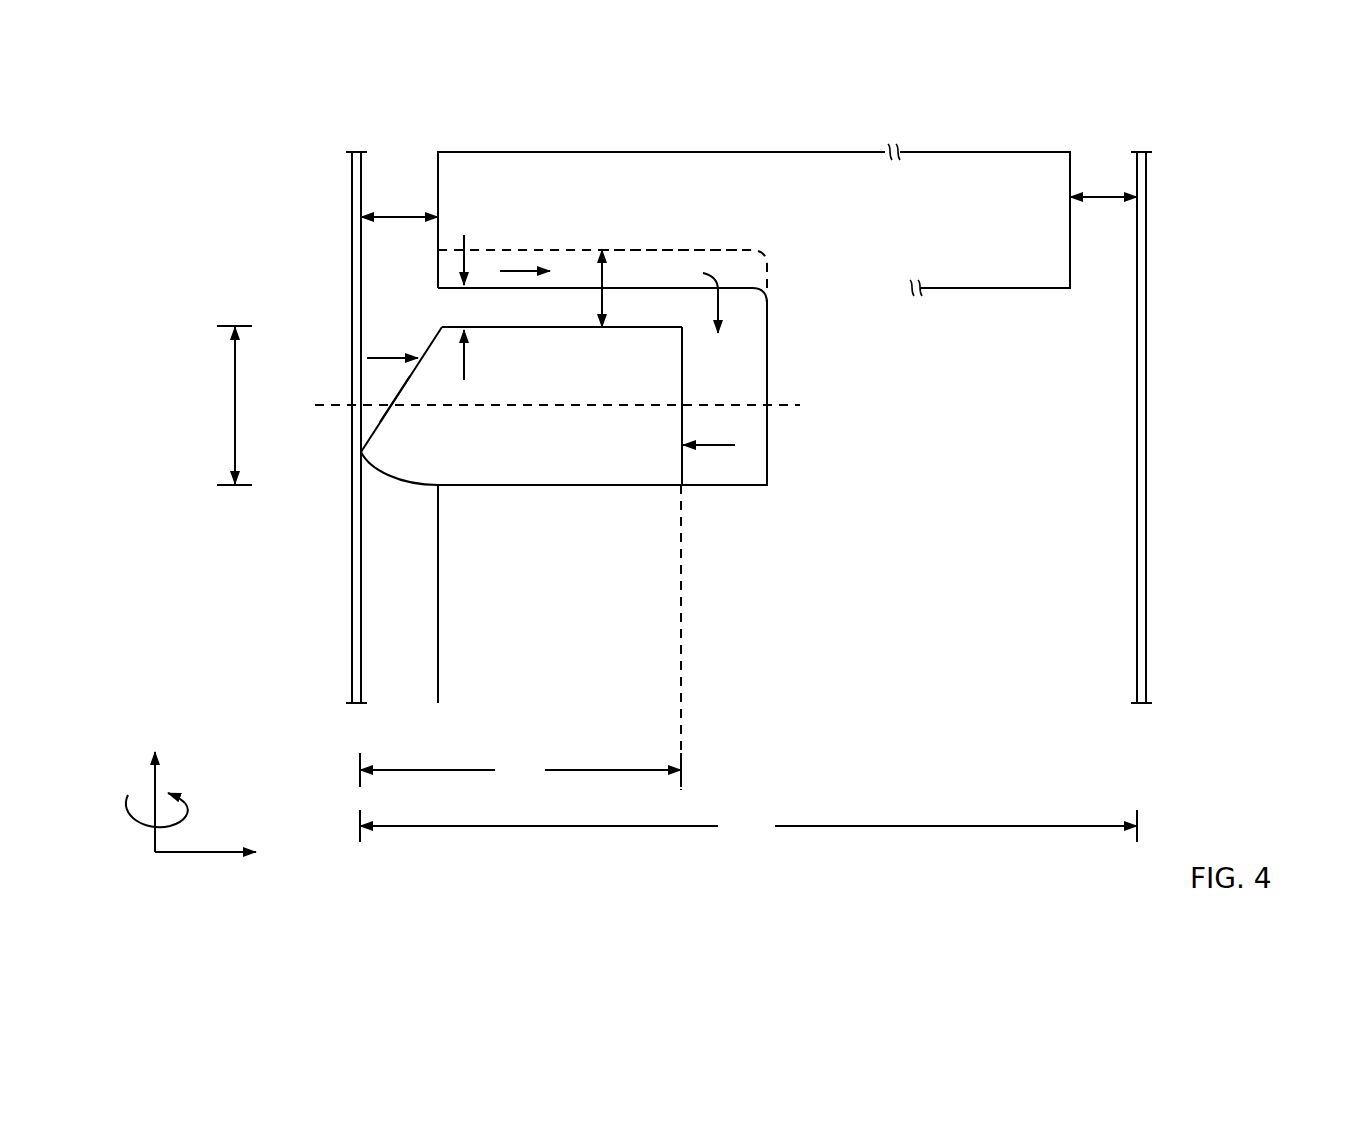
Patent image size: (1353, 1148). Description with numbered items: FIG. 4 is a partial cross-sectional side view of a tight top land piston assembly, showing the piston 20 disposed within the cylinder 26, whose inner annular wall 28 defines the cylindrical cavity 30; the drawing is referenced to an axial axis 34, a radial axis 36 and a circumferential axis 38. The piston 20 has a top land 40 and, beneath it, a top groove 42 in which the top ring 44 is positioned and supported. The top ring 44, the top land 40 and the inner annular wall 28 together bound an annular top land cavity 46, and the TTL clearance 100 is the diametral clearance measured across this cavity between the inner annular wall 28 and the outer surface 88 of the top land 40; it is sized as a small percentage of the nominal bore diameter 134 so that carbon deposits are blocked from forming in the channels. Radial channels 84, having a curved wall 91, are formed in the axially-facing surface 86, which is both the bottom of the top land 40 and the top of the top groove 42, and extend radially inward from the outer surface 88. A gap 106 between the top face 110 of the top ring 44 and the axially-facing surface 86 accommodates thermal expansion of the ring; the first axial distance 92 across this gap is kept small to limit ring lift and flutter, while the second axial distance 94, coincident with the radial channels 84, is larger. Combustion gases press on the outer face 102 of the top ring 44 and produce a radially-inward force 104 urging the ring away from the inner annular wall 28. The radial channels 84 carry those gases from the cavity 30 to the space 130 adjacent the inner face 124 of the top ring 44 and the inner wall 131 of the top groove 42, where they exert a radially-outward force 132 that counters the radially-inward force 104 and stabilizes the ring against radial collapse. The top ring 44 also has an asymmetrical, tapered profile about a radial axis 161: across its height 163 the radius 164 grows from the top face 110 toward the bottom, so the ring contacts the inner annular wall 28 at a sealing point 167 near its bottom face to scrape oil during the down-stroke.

The piston 20 is at (708, 133).
The cylinder 26 is at (353, 216).
The inner annular wall 28 is at (362, 172).
The cylindrical cavity 30 is at (389, 613).
The axial axis 34 is at (152, 785).
The radial axis 36 is at (200, 852).
The circumferential axis 38 is at (185, 818).
The top land 40 is at (539, 152).
The top groove 42 is at (425, 298).
The top ring 44 is at (424, 448).
The top land cavity 46 is at (749, 227).
The radial channels 84 is at (735, 250).
The axially-facing surface 86 is at (633, 290).
The outer surface 88 is at (436, 160).
The curved wall 91 is at (632, 250).
The first axial distance 92 is at (465, 360).
The second axial distance 94 is at (605, 298).
The TTL clearance 100 is at (400, 218).
The outer face 102 is at (376, 428).
The radially-inward force 104 is at (388, 357).
The gap 106 is at (478, 308).
The top face 110 is at (522, 326).
The inner face 124 is at (683, 467).
The space 130 is at (723, 392).
The inner wall 131 is at (767, 366).
The radially-outward force 132 is at (520, 271).
The nominal bore diameter 134 is at (748, 826).
The radial axis 161 is at (333, 404).
The height 163 is at (235, 405).
The radius 164 is at (520, 637).
The sealing point 167 is at (360, 456).